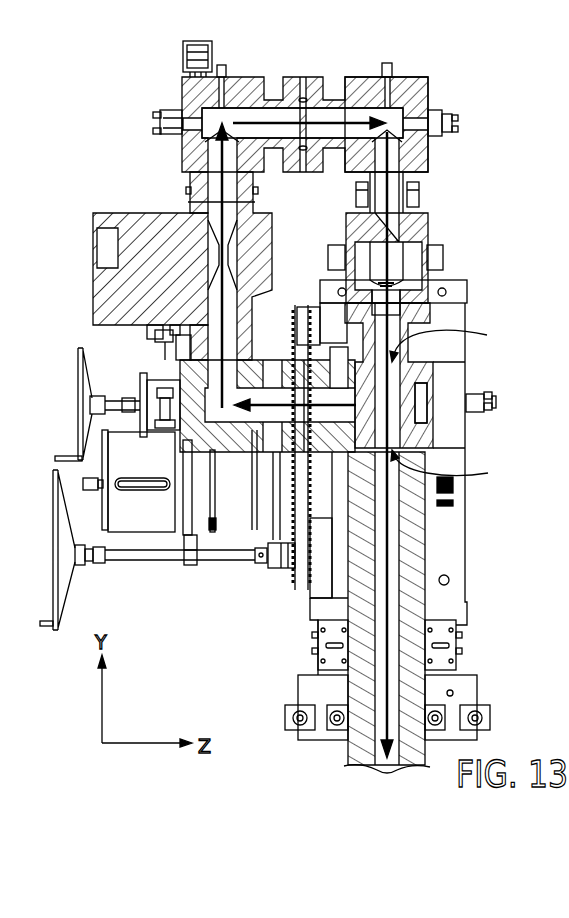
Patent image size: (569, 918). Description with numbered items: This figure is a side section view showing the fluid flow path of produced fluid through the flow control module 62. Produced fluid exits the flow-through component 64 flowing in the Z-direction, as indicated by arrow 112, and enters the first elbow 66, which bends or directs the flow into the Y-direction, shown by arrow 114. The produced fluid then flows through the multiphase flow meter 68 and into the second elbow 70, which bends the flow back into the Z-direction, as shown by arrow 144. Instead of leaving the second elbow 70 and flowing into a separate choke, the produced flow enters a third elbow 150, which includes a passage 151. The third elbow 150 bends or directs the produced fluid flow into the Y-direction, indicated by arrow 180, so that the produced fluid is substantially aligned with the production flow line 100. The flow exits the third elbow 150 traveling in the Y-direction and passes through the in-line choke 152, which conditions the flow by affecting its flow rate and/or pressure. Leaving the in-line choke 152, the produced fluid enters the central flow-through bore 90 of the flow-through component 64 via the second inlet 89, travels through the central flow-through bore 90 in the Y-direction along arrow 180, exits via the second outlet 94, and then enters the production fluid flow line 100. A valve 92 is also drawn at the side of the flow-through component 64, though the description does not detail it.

The flow control module 62 is at (70, 190).
The flow-through component 64 is at (413, 433).
The first elbow 66 is at (193, 442).
The multiphase flow meter 68 is at (107, 302).
The second elbow 70 is at (182, 150).
The second inlet 89 is at (451, 343).
The central flow-through bore 90 is at (392, 382).
The valve 92 is at (418, 393).
The second outlet 94 is at (452, 465).
The production flow line 100 is at (348, 752).
The arrow 112 is at (264, 402).
The arrow 114 is at (208, 204).
The arrow 144 is at (272, 120).
The third elbow 150 is at (403, 104).
The passage 151 is at (404, 113).
The in-line choke 152 is at (415, 240).
The arrow 180 is at (388, 192).